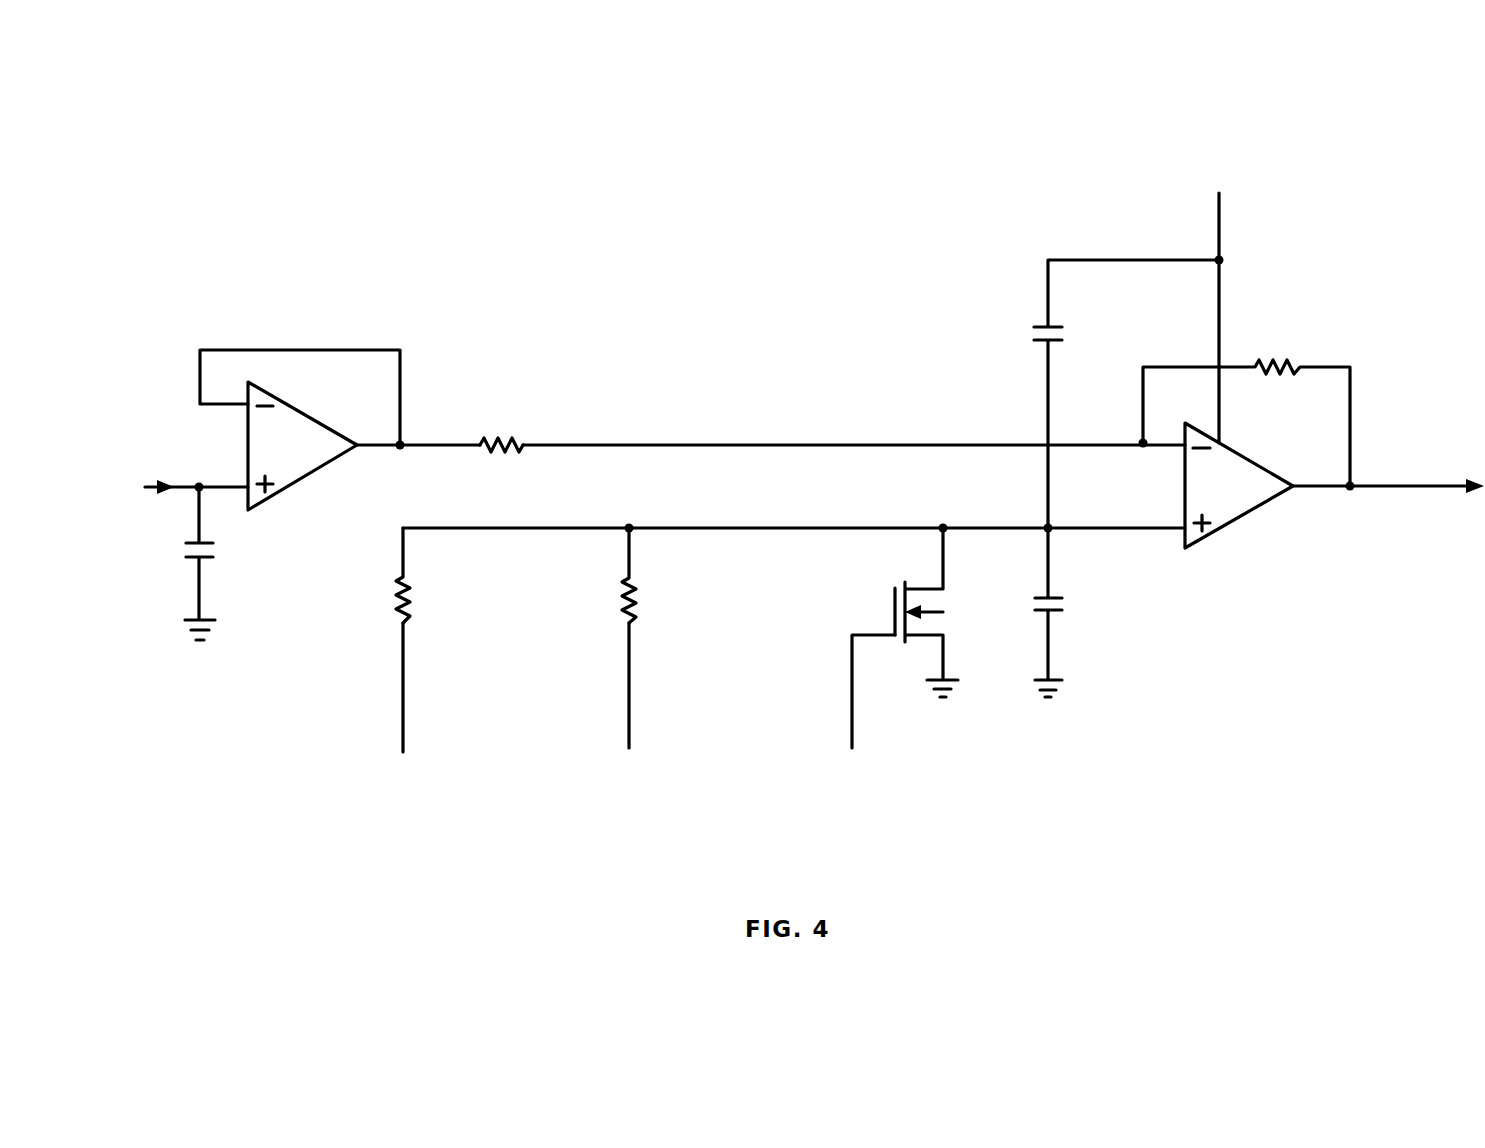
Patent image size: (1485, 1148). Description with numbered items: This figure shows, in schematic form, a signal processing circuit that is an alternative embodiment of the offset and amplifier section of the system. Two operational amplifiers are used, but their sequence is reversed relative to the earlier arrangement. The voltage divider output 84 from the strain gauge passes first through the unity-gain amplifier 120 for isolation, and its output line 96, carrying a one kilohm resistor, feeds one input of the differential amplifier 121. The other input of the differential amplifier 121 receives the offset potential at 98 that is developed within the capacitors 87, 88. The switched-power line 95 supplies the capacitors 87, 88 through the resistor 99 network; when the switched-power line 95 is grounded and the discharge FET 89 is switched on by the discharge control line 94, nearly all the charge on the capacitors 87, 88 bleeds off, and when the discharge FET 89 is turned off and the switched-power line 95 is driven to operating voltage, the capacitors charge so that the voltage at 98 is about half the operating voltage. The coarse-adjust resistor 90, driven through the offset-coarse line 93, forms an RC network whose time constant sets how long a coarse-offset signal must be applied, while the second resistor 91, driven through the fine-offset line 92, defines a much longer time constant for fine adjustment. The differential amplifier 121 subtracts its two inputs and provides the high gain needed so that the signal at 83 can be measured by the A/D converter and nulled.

The signal to A/D converter 83 is at (1403, 488).
The voltage divider output 84 is at (178, 483).
The capacitor 87 is at (1033, 330).
The capacitor 88 is at (1062, 613).
The discharge FET 89 is at (900, 583).
The coarse-adjust resistor 90 is at (623, 593).
The second resistor 91 is at (397, 593).
The fine-offset line 92 is at (628, 720).
The offset-coarse line 93 is at (402, 718).
The discharge control line 94 is at (852, 720).
The switched-power line 95 is at (1222, 213).
The buffered output line with 1K resistor 96 is at (433, 447).
The offset potential node 98 is at (1117, 525).
The 249K feedback resistor 99 is at (1268, 358).
The unity-gain amplifier 120 is at (308, 478).
The differential amplifier 121 is at (1253, 512).